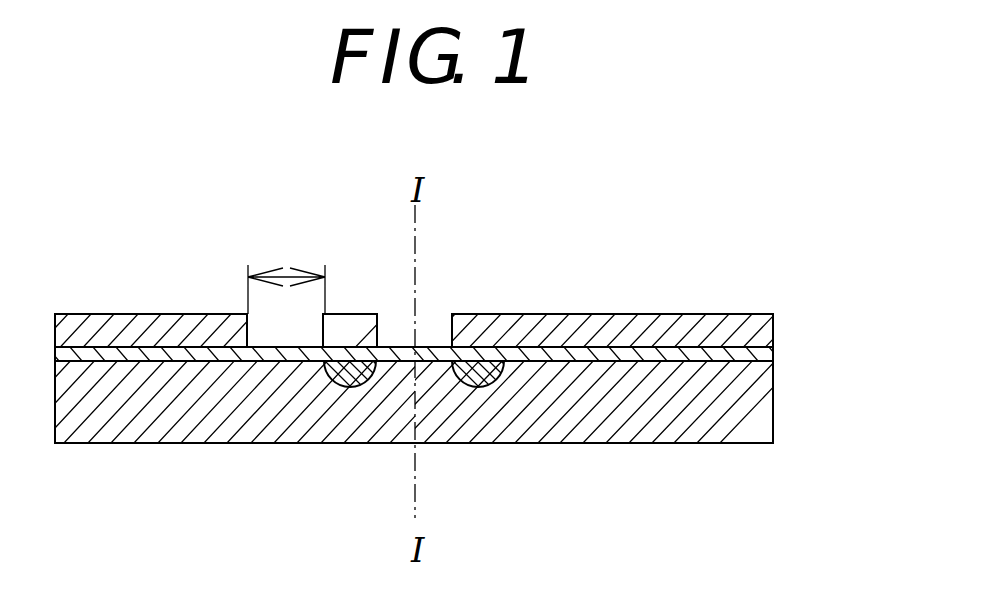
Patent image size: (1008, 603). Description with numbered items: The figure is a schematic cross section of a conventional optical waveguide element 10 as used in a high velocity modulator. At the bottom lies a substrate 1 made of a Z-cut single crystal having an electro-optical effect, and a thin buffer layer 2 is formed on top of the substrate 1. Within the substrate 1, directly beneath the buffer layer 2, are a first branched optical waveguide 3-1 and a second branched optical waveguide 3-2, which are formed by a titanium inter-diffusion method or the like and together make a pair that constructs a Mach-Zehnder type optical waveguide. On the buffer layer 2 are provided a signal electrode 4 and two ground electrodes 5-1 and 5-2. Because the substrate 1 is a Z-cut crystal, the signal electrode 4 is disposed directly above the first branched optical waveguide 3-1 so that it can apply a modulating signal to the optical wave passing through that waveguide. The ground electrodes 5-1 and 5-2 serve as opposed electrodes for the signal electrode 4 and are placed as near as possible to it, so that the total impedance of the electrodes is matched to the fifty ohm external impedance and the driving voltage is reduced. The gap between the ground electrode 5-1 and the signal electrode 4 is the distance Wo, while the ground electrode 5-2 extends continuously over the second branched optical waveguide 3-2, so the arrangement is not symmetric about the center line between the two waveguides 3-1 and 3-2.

The substrate 1 is at (745, 397).
The buffer layer 2 is at (770, 355).
The first branched optical waveguide 3-1 is at (337, 387).
The second branched optical waveguide 3-2 is at (495, 377).
The signal electrode 4 is at (357, 327).
The ground electrode 5-1 is at (175, 328).
The ground electrode 5-2 is at (632, 330).
The optical waveguide element 10 is at (740, 295).
The distance between ground electrode and signal electrode Wo is at (286, 270).